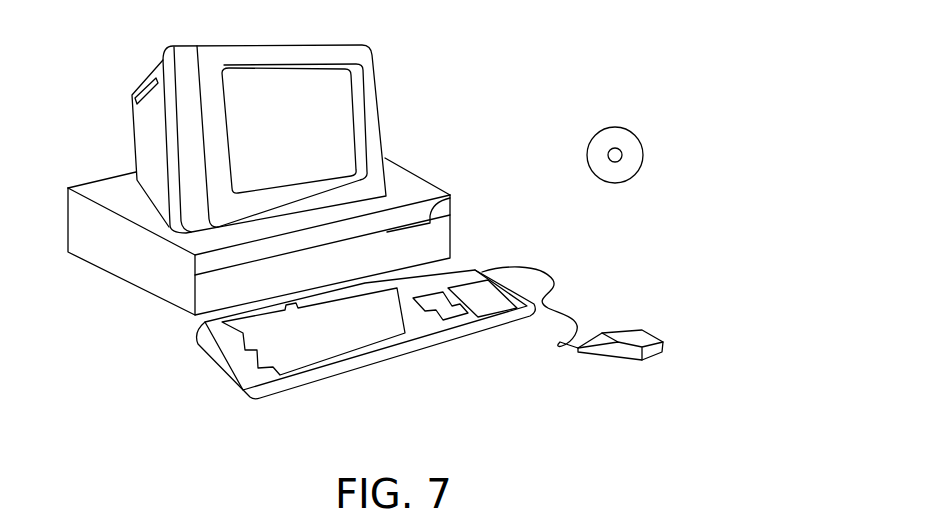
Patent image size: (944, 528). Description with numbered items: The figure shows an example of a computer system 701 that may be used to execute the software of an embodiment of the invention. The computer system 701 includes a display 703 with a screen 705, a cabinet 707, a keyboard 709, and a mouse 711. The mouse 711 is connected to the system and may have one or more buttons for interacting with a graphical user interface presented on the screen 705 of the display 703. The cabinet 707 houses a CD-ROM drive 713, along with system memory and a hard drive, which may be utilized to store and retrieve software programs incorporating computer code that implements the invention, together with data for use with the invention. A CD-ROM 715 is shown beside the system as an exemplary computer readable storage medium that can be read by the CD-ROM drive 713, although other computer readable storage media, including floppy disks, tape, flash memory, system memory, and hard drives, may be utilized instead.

The computer system 701 is at (551, 24).
The display 703 is at (383, 136).
The screen 705 is at (349, 92).
The cabinet 707 is at (168, 303).
The keyboard 709 is at (370, 365).
The mouse 711 is at (655, 333).
The CD-ROM drive 713 is at (452, 195).
The CD-ROM 715 is at (628, 128).